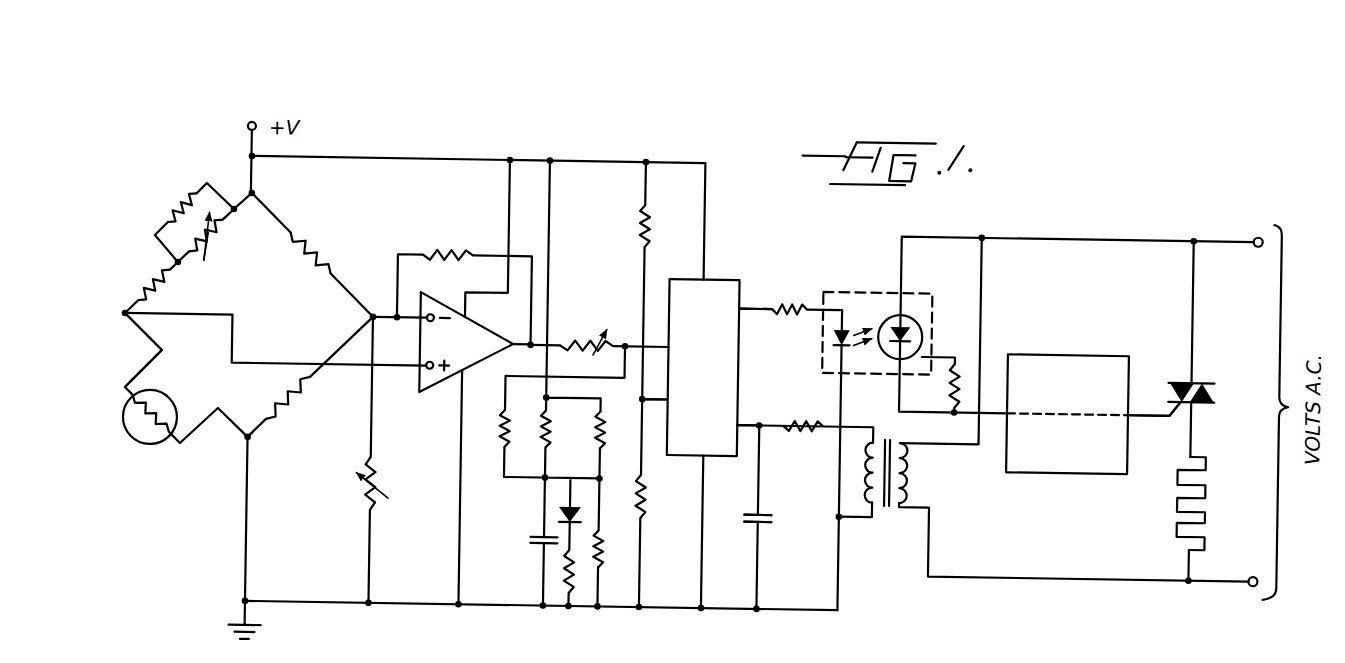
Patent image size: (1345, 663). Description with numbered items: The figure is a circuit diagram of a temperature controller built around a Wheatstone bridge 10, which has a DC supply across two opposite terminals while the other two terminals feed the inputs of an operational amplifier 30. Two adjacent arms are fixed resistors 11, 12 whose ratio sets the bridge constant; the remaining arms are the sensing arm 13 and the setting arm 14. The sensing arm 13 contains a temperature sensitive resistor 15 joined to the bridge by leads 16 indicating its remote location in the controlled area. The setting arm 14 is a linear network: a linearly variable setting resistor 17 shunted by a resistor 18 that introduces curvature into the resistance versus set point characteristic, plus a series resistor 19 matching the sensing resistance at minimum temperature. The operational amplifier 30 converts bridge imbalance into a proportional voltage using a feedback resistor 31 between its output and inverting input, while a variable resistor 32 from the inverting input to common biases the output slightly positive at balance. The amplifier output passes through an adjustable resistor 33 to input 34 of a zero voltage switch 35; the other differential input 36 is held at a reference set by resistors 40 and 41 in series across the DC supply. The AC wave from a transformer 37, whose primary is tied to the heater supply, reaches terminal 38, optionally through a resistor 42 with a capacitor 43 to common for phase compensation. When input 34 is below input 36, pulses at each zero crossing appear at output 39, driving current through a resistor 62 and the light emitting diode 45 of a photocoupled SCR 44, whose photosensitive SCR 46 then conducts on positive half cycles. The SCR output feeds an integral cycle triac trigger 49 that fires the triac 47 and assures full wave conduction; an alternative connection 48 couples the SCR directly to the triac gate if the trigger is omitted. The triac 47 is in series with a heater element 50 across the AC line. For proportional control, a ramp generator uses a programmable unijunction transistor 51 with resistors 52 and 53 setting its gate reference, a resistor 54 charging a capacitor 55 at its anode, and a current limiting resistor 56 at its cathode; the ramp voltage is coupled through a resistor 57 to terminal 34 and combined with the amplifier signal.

The Wheatstone bridge 10 is at (185, 463).
The fixed resistor 11 is at (319, 246).
The fixed resistor 12 is at (300, 403).
The sensing arm 13 is at (131, 378).
The setting arm 14 is at (199, 275).
The temperature sensitive resistor 15 is at (130, 441).
The leads 16 is at (156, 369).
The linearly variable setting resistor 17 is at (213, 239).
The shunt resistor 18 is at (168, 225).
The series resistor 19 is at (134, 290).
The operational amplifier 30 is at (432, 392).
The feedback resistor 31 is at (449, 254).
The variable resistor 32 is at (360, 504).
The adjustable resistor 33 is at (583, 339).
The input terminal 34 is at (660, 348).
The zero voltage switch 35 is at (722, 278).
The input terminal 36 is at (661, 404).
The transformer 37 is at (895, 504).
The AC input terminal 38 is at (745, 421).
The output terminal 39 is at (747, 301).
The biasing resistor 40 is at (640, 232).
The biasing resistor 41 is at (648, 497).
The resistor 42 is at (804, 430).
The capacitor 43 is at (769, 511).
The photocoupled SCR 44 is at (877, 289).
The light emitting diode 45 is at (826, 336).
The photosensitive SCR 46 is at (916, 316).
The triac 47 is at (1181, 372).
The alternative connection 48 is at (1094, 409).
The integral cycle triac trigger 49 is at (1062, 349).
The heater element 50 is at (1179, 504).
The programmable unijunction transistor 51 is at (562, 516).
The resistor 52 is at (601, 447).
The resistor 53 is at (609, 552).
The resistor 54 is at (540, 471).
The capacitor 55 is at (540, 548).
The resistor 56 is at (568, 568).
The resistor 57 is at (501, 448).
The resistor 62 is at (796, 319).